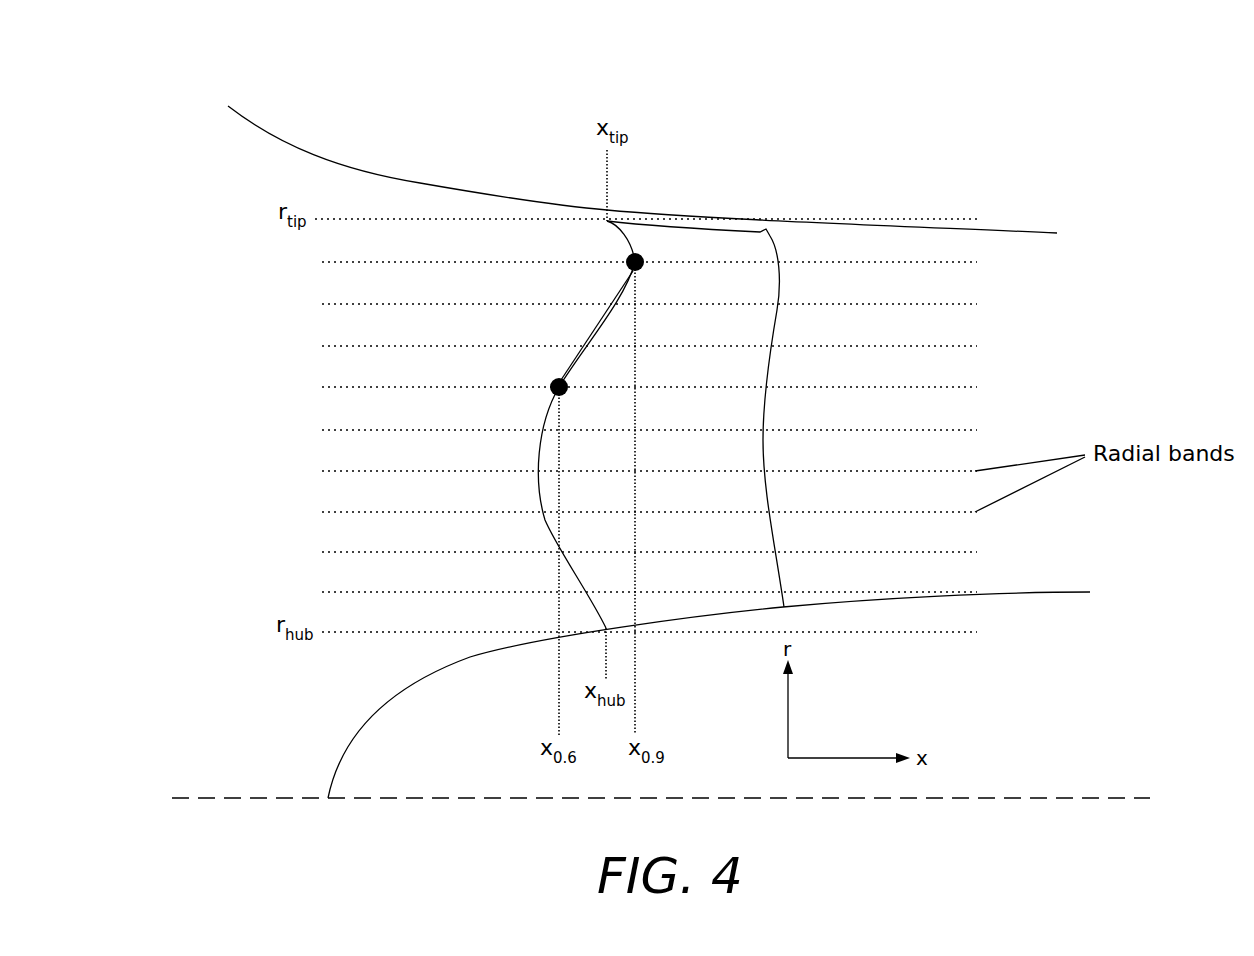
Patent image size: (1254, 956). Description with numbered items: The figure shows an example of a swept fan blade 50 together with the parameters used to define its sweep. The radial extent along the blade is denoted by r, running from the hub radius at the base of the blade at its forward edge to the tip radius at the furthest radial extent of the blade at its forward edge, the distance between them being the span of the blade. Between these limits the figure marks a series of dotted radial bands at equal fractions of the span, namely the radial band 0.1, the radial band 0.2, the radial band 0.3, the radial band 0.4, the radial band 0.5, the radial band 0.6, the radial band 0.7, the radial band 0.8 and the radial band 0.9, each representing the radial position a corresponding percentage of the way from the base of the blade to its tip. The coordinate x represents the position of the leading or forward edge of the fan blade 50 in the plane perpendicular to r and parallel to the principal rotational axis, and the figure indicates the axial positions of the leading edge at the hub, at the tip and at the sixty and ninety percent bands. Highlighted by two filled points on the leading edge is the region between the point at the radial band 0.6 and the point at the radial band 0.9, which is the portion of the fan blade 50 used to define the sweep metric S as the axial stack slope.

The fan blade 50 is at (798, 409).
The radial band at 90% of blade span 0.9 is at (627, 258).
The radial band at 80% of blade span 0.8 is at (627, 300).
The radial band at 70% of blade span 0.7 is at (627, 342).
The radial band at 60% of blade span 0.6 is at (627, 383).
The radial band at 50% of blade span 0.5 is at (627, 426).
The radial band at 40% of blade span 0.4 is at (627, 467).
The radial band at 30% of blade span 0.3 is at (627, 508).
The radial band at 20% of blade span 0.2 is at (627, 548).
The radial band at 10% of blade span 0.1 is at (627, 588).